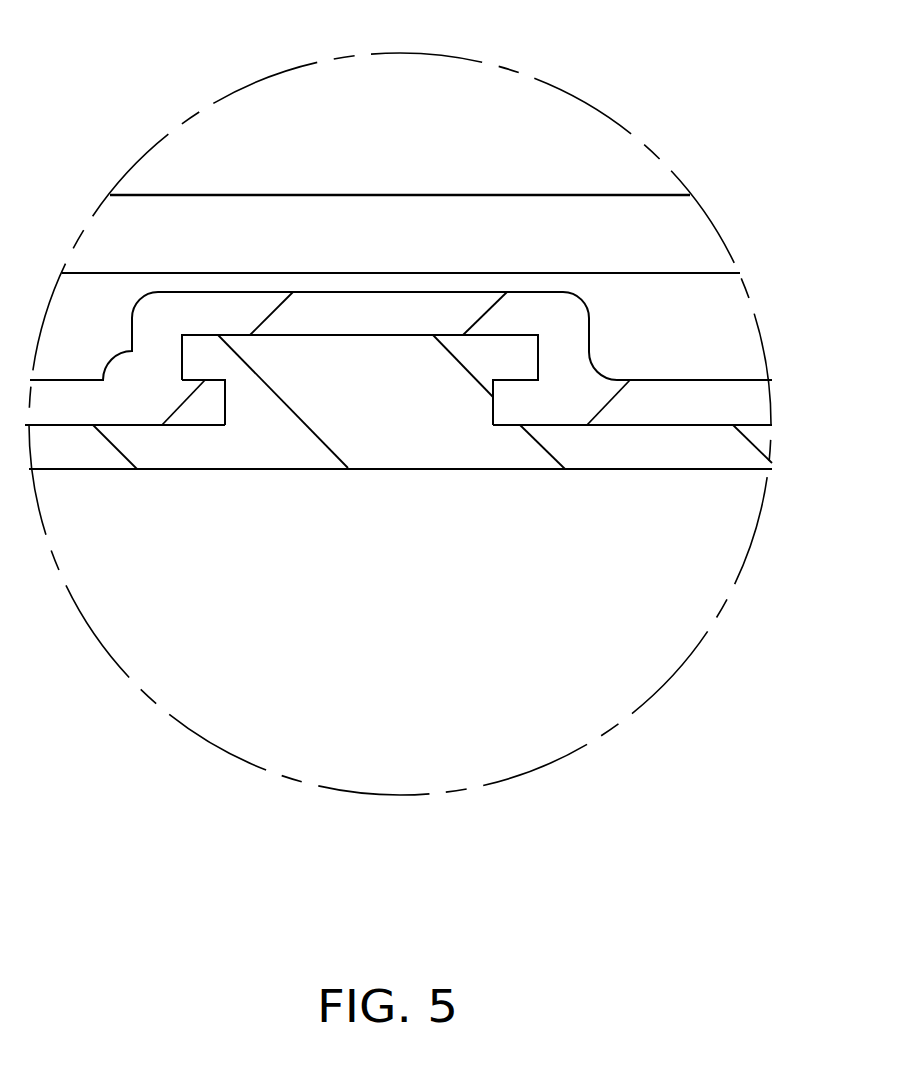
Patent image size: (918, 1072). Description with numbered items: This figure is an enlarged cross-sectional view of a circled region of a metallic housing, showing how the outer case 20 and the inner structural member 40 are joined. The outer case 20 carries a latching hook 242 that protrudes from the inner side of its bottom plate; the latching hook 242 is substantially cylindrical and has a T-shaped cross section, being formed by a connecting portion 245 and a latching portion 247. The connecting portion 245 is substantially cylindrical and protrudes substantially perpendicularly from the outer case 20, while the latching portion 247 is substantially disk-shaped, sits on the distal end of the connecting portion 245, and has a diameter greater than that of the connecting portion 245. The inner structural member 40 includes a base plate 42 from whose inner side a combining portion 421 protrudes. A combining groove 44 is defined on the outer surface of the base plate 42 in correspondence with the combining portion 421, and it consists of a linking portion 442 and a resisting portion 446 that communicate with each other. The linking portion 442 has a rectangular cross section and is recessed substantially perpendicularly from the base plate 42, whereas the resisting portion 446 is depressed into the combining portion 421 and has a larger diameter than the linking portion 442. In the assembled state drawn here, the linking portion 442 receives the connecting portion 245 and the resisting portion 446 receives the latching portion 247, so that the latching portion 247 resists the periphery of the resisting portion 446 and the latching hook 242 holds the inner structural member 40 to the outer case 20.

The outer case 20 is at (167, 452).
The inner structural member 40 is at (663, 400).
The base plate 42 is at (379, 276).
The combining portion 421 is at (370, 317).
The combining groove 44 is at (143, 70).
The linking portion 442 is at (80, 425).
The resisting portion 446 is at (225, 406).
The latching hook 242 is at (673, 828).
The connecting portion 245 is at (393, 395).
The latching portion 247 is at (517, 358).